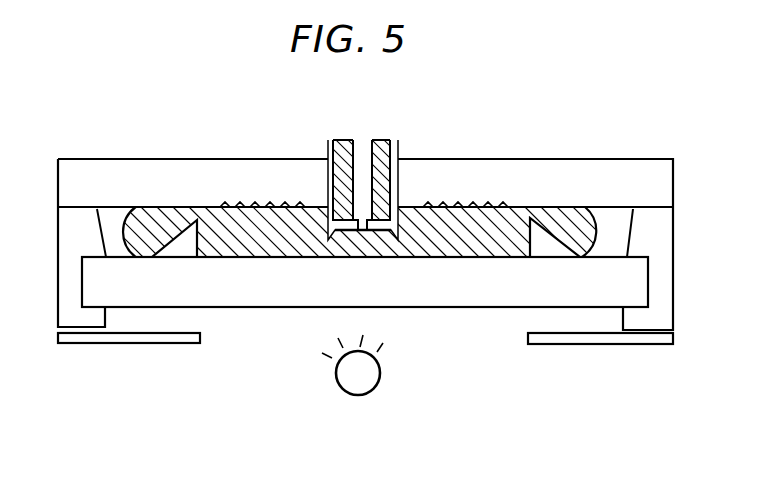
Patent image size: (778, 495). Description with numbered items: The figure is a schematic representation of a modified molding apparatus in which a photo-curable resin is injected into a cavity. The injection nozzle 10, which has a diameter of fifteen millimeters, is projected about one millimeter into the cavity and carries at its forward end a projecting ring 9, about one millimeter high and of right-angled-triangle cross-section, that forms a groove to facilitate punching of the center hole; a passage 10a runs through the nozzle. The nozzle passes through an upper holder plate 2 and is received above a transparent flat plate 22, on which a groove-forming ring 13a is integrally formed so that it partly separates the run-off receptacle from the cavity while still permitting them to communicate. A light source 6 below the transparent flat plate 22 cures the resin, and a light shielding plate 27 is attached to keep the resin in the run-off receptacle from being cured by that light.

The holder plate 2 is at (512, 170).
The light source 6 is at (372, 373).
The projecting ring 9 is at (384, 232).
The injection nozzle 10 is at (364, 170).
The slot 10a is at (363, 157).
The roller wedge 13a is at (542, 242).
The transparent flat plate 22 is at (498, 292).
The light shielding plate 27 is at (573, 345).